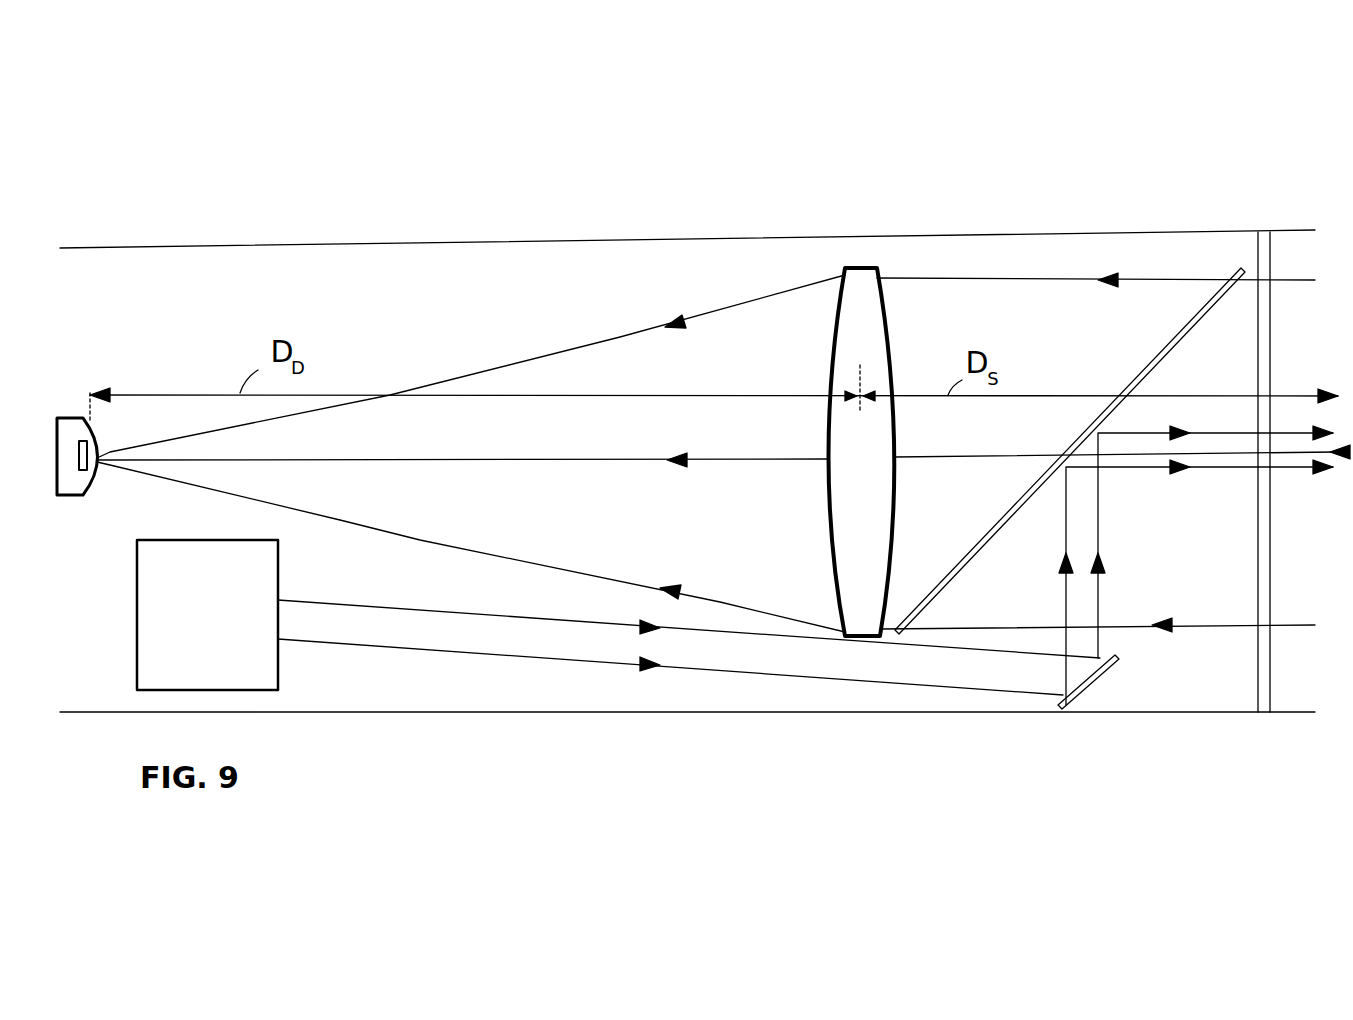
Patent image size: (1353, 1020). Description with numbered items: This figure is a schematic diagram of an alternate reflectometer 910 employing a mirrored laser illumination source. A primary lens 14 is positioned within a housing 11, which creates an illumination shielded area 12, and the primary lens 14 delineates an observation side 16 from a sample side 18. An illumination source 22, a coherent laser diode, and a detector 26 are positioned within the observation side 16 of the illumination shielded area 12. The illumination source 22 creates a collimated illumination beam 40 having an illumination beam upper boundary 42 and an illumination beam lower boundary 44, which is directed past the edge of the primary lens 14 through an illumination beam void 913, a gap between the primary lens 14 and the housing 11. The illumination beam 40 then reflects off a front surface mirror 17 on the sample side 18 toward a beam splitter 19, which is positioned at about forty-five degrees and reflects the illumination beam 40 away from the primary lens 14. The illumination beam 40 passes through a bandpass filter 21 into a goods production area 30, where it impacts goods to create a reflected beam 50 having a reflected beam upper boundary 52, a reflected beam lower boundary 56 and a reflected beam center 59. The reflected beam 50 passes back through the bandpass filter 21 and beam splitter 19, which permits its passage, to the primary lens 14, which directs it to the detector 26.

The reflectometer 910 is at (378, 178).
The housing 11 is at (702, 243).
The illumination shielded area 12 is at (545, 270).
The primary lens 14 is at (896, 356).
The observation side 16 is at (768, 178).
The front surface mirror 17 is at (1095, 685).
The sample side 18 is at (912, 182).
The beam splitter 19 is at (1195, 313).
The bandpass filter 21 is at (1265, 250).
The illumination source 22 is at (203, 553).
The detector 26 is at (90, 496).
The goods production area 30 is at (1340, 370).
The illumination beam 40 is at (427, 628).
The illumination beam upper boundary 42 is at (470, 617).
The illumination beam lower boundary 44 is at (540, 658).
The reflected beam 50 is at (767, 335).
The reflected beam upper boundary 52 is at (582, 347).
The reflected beam lower boundary 56 is at (396, 536).
The reflected beam center 59 is at (495, 466).
The illumination beam void 913 is at (840, 697).